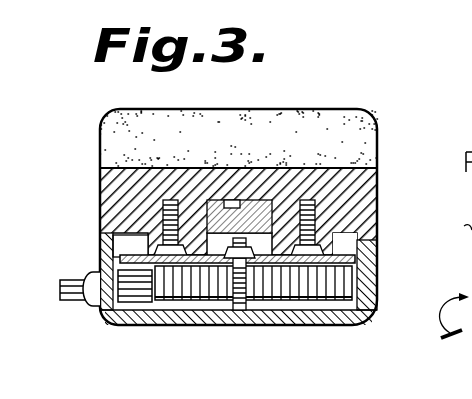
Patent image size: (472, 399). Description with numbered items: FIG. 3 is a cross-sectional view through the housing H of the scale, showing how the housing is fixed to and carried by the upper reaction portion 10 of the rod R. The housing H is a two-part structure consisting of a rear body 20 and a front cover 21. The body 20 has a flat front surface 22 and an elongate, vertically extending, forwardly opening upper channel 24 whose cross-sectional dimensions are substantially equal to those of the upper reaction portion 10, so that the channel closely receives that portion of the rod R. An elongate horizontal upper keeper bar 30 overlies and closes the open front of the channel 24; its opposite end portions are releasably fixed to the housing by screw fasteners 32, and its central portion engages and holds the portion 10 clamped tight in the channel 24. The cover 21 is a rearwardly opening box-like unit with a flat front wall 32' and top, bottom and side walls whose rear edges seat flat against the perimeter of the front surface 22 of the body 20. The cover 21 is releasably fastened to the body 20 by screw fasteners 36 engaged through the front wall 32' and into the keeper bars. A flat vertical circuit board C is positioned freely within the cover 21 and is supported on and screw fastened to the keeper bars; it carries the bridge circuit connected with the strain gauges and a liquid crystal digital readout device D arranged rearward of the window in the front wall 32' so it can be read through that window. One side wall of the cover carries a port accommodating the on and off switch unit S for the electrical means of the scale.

The upper reaction portion 10 is at (232, 200).
The body 20 is at (94, 137).
The cover 21 is at (130, 333).
The flat front surface 22 is at (99, 253).
The upper channel 24 is at (250, 200).
The upper keeper bar 30 is at (370, 242).
The screw fasteners 32 is at (238, 226).
The front wall 32' is at (237, 312).
The screw fasteners 36 is at (238, 310).
The circuit board C is at (178, 303).
The liquid crystal digital readout device D is at (346, 305).
The housing H is at (398, 68).
The rod R is at (270, 190).
The on and off switch unit S is at (50, 302).